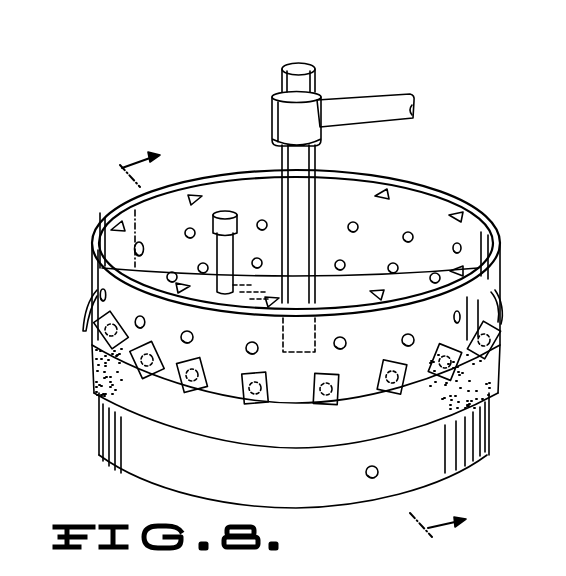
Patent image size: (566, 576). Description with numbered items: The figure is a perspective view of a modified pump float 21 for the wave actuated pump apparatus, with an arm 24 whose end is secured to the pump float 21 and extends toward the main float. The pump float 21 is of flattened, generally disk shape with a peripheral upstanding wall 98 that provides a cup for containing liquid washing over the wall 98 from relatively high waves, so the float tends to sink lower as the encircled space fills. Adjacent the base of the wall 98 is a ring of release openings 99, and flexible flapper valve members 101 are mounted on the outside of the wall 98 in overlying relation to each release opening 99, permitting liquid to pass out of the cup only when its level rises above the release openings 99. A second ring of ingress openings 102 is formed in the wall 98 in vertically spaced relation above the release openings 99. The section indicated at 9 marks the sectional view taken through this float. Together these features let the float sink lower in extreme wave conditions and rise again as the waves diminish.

The pump float 21 is at (211, 118).
The arm 24 is at (373, 94).
The peripheral upstanding wall 98 is at (494, 235).
The release openings 99 is at (256, 258).
The flapper valve members 101 is at (488, 345).
The ingress openings 102 is at (456, 243).
The section line 9- 9 is at (300, 334).